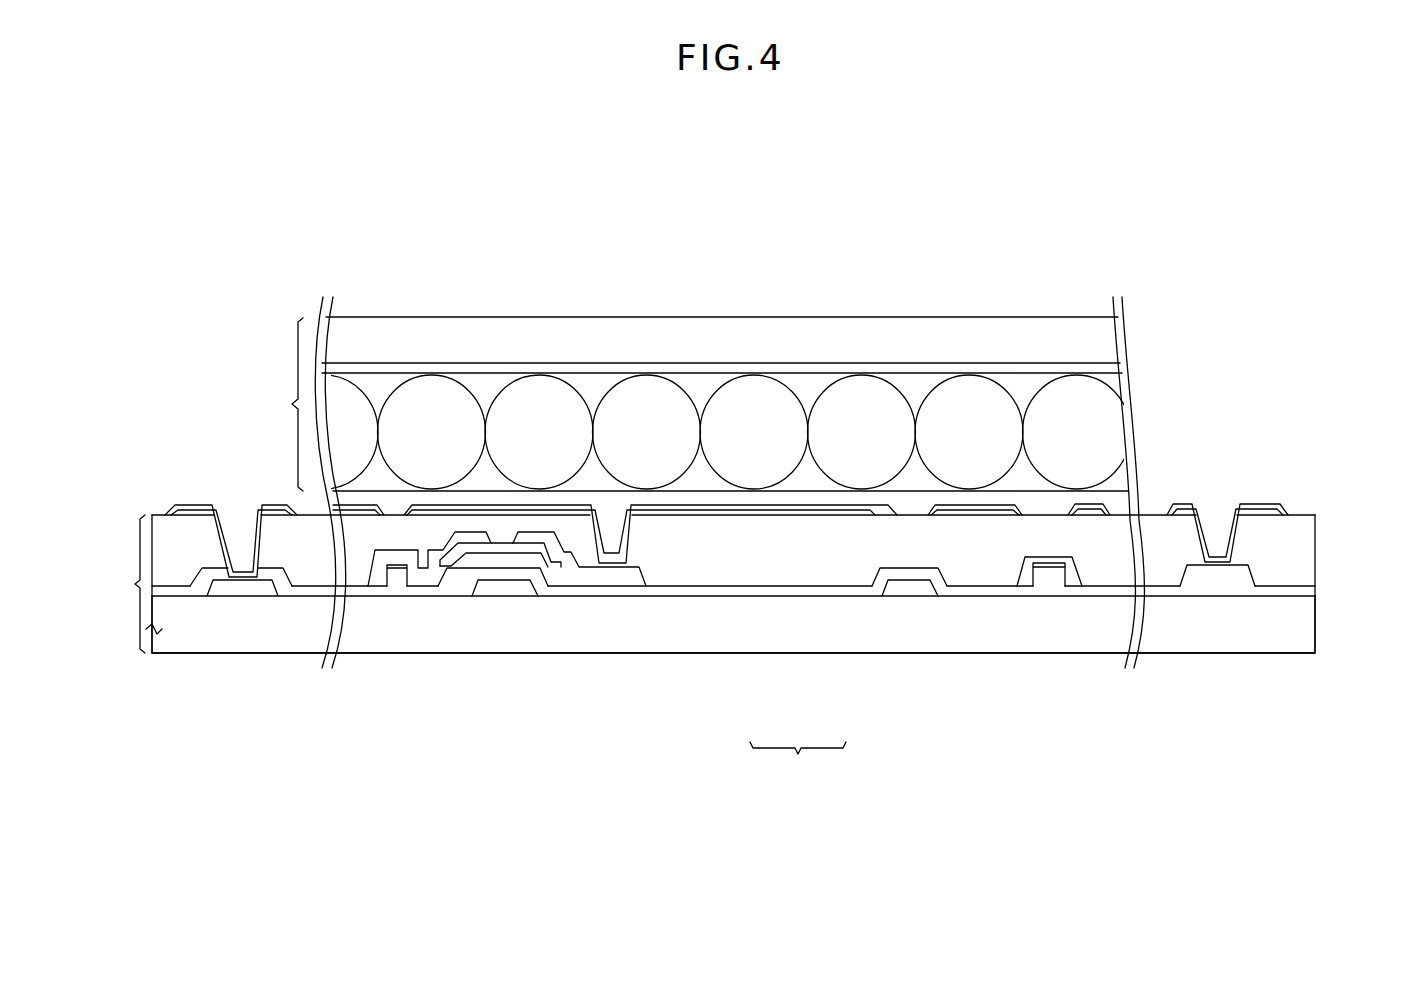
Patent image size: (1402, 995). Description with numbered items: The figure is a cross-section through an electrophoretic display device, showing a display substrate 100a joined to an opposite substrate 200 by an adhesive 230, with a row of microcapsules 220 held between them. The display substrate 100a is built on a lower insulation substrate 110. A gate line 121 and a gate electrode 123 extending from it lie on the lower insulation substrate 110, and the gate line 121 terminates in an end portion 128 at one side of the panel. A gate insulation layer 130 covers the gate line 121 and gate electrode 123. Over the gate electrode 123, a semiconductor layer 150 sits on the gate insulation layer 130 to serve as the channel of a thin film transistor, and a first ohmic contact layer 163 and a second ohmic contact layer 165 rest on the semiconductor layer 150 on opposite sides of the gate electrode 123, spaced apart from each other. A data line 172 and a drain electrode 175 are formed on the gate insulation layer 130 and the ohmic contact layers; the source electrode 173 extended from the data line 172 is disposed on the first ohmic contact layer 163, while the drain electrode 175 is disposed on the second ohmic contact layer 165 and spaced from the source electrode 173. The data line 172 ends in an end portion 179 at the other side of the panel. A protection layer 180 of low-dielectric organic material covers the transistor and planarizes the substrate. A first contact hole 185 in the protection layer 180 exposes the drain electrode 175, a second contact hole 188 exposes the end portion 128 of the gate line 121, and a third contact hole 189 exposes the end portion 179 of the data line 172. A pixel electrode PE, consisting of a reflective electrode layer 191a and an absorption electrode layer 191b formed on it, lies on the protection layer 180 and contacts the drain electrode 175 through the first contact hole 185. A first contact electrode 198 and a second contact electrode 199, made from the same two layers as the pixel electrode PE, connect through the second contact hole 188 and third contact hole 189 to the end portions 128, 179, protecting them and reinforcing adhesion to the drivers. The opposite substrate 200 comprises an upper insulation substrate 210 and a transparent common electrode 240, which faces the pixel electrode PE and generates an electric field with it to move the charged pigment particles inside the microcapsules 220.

The display substrate 100a is at (696, 584).
The lower insulation substrate 110 is at (1315, 633).
The gate line 121 is at (913, 590).
The gate electrode 123 is at (505, 588).
The end portion of the gate line 128 is at (243, 590).
The gate insulation layer 130 is at (1315, 589).
The semiconductor layer 150 is at (475, 557).
The first ohmic contact layer 163 is at (446, 560).
The second ohmic contact layer 165 is at (561, 570).
The data line 172 is at (396, 578).
The source electrode 173 is at (483, 540).
The drain electrode 175 is at (604, 578).
The end portion of the data line 179 is at (1220, 572).
The protection layer 180 is at (1315, 548).
The first contact hole 185 is at (642, 545).
The second contact hole 188 is at (212, 541).
The third contact hole 189 is at (1190, 541).
The reflective electrode layer 191a is at (768, 512).
The absorption electrode layer 191b is at (820, 506).
The first contact electrode 198 is at (199, 505).
The second contact electrode 199 is at (1262, 503).
The opposite substrate 200 is at (731, 366).
The upper insulation substrate 210 is at (777, 343).
The microcapsule 220 is at (966, 393).
The adhesive 230 is at (1117, 497).
The common electrode 240 is at (909, 370).
The pixel electrode PE is at (798, 762).